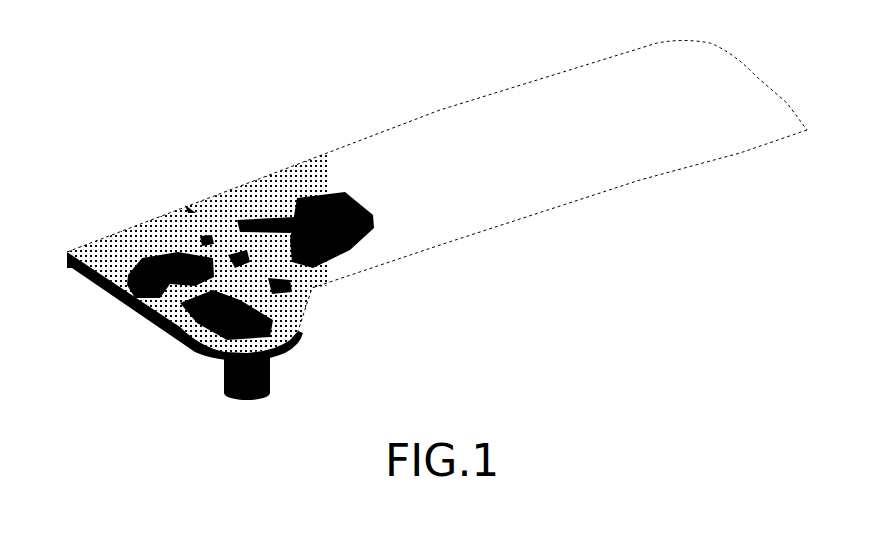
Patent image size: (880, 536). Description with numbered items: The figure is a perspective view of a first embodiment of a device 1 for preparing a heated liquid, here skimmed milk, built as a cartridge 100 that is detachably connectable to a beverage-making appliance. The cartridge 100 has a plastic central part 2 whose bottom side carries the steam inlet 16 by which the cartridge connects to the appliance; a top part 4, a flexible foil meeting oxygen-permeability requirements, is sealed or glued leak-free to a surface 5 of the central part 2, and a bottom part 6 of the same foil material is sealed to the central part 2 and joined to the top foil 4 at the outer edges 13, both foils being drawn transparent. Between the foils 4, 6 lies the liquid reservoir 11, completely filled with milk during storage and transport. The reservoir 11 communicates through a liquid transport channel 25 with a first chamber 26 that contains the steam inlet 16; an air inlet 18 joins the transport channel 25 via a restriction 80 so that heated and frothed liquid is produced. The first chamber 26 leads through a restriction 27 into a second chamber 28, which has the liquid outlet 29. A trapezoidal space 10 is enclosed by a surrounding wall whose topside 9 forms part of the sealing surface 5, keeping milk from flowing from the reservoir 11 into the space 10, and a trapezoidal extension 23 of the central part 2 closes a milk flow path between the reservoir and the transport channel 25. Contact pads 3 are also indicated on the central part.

The cartridge 100 is at (110, 72).
The device for preparing a heated liquid 1 is at (296, 140).
The central part 2 is at (243, 418).
The contact pads 3 is at (220, 330).
The top part 4 is at (435, 115).
The surface 5 is at (118, 271).
The bottom part 6 is at (495, 258).
The topside of the surrounding wall 9 is at (302, 227).
The trapezoidal space 10 is at (273, 240).
The liquid reservoir 11 is at (637, 135).
The outer edges 13 is at (560, 87).
The steam inlet 16 is at (157, 260).
The air inlet 18 is at (207, 243).
The trapezoidal extension 23 is at (362, 217).
The liquid transport channel 25 is at (255, 255).
The first chamber 26 is at (195, 272).
The restriction 27 is at (199, 301).
The second chamber 28 is at (258, 329).
The liquid outlet 29 is at (277, 381).
The restriction 80 is at (220, 252).